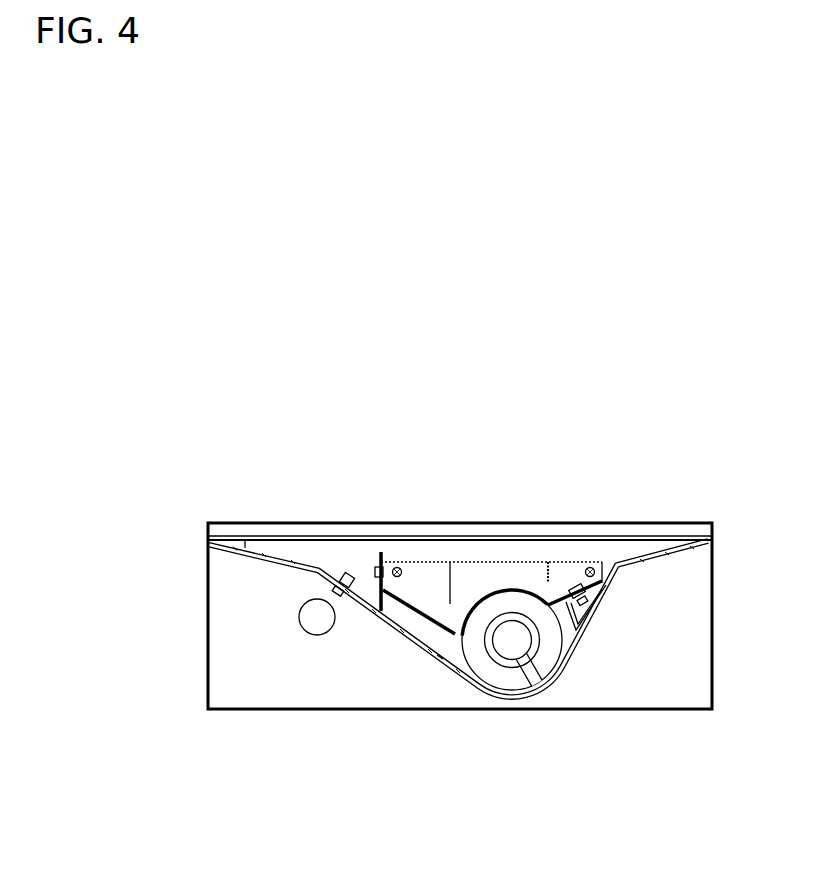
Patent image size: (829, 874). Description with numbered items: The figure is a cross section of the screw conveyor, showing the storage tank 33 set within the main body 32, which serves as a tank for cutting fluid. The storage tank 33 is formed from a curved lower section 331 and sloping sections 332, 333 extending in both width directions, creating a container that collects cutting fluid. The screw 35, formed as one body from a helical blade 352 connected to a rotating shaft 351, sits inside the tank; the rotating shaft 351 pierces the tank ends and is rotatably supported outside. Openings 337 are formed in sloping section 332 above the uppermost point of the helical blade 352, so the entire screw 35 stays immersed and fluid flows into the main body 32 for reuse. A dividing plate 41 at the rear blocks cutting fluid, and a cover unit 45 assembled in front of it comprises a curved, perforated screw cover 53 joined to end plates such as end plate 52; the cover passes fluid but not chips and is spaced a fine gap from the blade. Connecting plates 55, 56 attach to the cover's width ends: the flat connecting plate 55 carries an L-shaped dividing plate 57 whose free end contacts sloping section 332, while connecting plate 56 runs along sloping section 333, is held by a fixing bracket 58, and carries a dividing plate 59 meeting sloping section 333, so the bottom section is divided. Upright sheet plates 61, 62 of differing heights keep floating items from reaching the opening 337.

The main body 32 is at (263, 683).
The storage tank 33 is at (458, 607).
The sloping section 333 is at (410, 641).
The curved lower section 331 is at (554, 682).
The sloping section 332 is at (578, 637).
The opening 337 is at (628, 562).
The dividing plate 41 is at (325, 553).
The cover unit 45 is at (427, 556).
The end plate 52 is at (531, 566).
The screw cover 53 is at (500, 590).
The connecting plate 55 is at (580, 585).
The connecting plate 56 is at (412, 612).
The dividing plate 57 is at (575, 615).
The fixing bracket 58 is at (378, 556).
The dividing plate 59 is at (450, 653).
The sheet plate 61 is at (460, 566).
The sheet plate 62 is at (551, 576).
The screw 35 is at (517, 701).
The rotating shaft 351 is at (495, 628).
The helical blade 352 is at (521, 667).